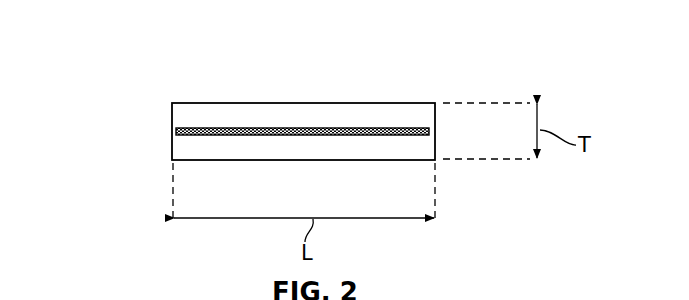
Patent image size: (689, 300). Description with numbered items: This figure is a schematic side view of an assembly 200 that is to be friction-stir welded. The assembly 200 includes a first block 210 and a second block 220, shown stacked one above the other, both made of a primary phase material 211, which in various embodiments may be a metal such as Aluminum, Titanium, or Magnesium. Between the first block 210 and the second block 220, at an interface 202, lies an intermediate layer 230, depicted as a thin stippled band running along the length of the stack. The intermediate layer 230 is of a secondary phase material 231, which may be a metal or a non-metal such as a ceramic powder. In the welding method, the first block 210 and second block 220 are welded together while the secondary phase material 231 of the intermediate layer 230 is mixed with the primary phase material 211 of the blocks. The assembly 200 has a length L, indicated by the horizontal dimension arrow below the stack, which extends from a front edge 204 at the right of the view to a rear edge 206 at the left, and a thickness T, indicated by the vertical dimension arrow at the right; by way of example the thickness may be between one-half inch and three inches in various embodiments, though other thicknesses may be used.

The assembly 200 is at (163, 57).
The first block 210 is at (178, 115).
The second block 220 is at (178, 147).
The intermediate layer 230 is at (291, 126).
The primary phase material 211 is at (357, 117).
The secondary phase material 231 is at (330, 136).
The front edge 204 is at (449, 87).
The interface 202 is at (441, 130).
The rear edge 206 is at (162, 163).